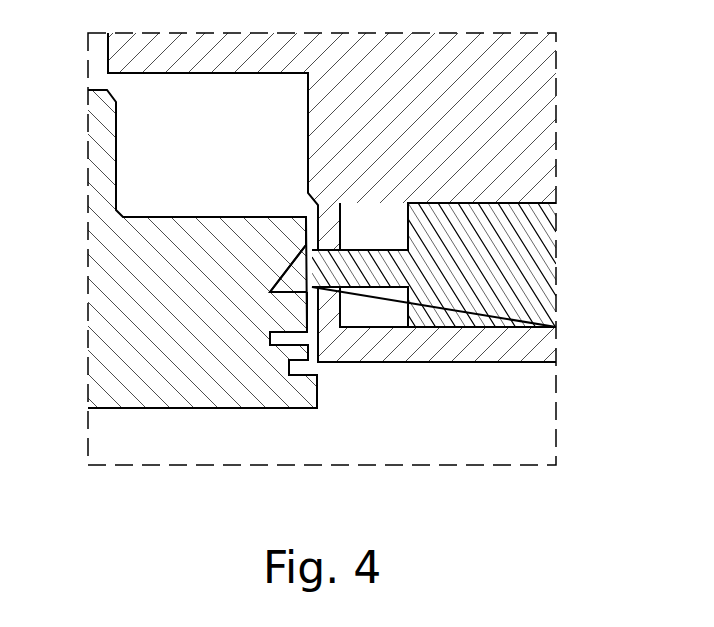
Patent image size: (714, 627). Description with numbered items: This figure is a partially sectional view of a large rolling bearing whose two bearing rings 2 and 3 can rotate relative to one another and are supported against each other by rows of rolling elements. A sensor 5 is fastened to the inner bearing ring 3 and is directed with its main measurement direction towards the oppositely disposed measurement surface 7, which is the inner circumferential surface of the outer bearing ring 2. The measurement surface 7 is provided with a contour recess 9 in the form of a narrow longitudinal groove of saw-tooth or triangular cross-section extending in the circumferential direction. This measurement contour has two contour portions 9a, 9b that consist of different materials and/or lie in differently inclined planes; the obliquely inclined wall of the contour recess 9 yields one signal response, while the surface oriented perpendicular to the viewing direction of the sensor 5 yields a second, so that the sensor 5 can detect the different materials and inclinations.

The bearing ring 2 is at (97, 373).
The bearing ring 3 is at (545, 120).
The sensor 5 is at (545, 262).
The measurement surface 7 is at (308, 300).
The contour recess 9 is at (296, 272).
The contour portion 9a is at (295, 263).
The contour portion 9b is at (306, 247).